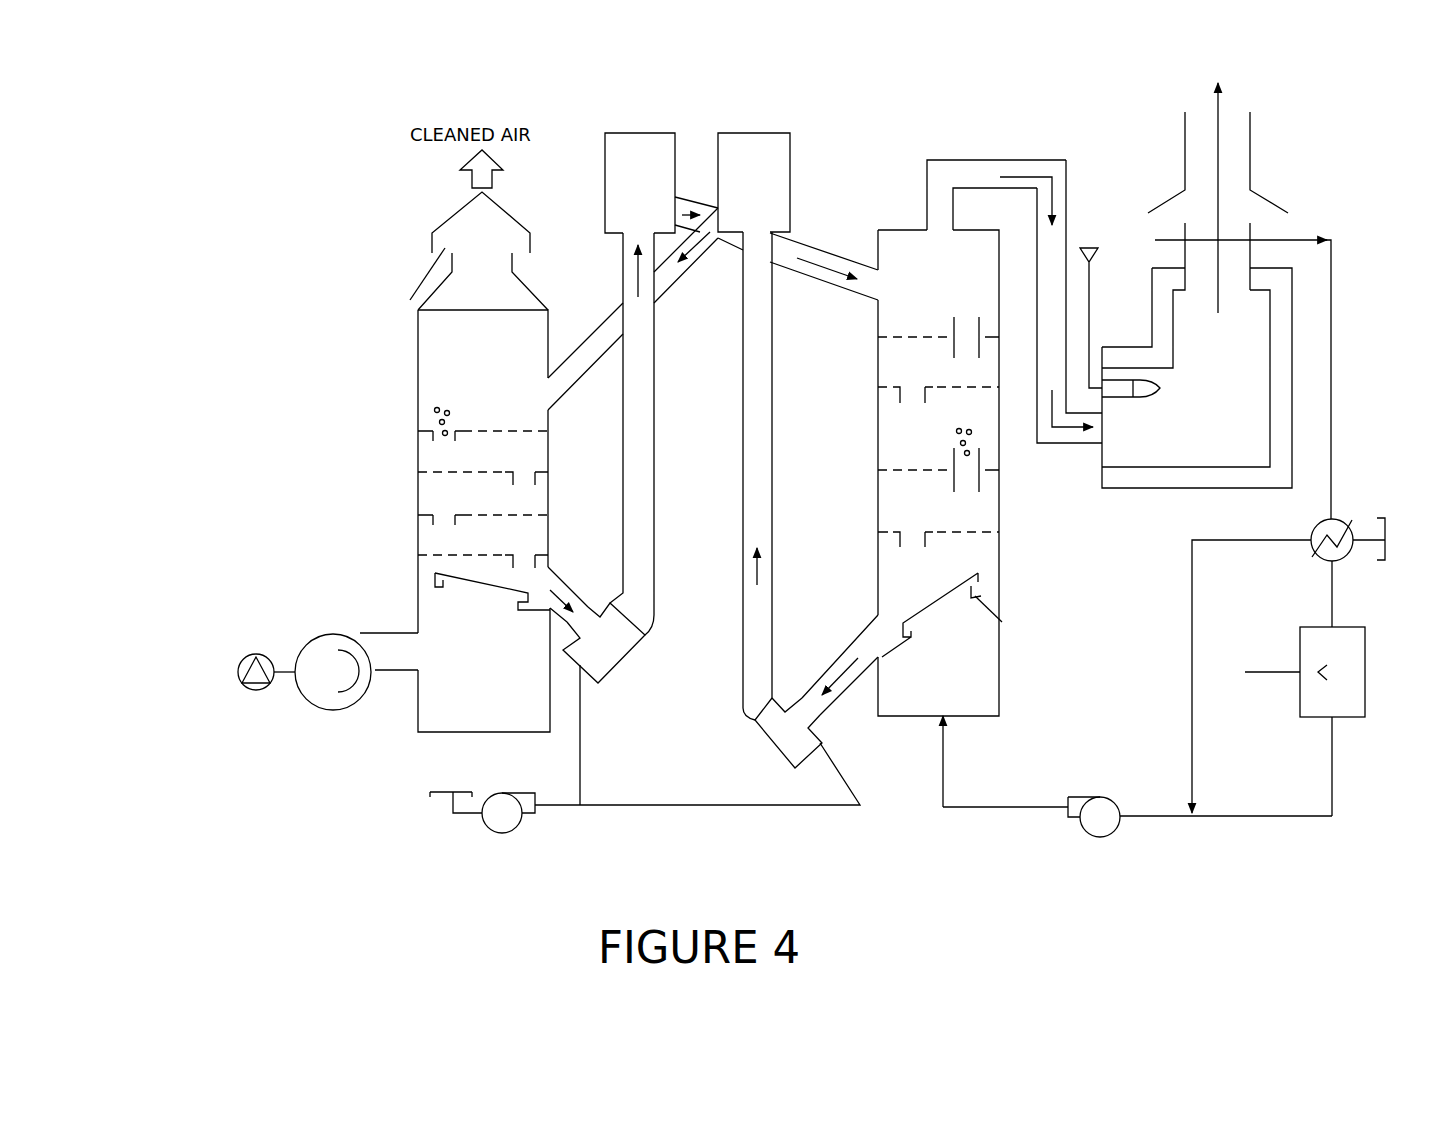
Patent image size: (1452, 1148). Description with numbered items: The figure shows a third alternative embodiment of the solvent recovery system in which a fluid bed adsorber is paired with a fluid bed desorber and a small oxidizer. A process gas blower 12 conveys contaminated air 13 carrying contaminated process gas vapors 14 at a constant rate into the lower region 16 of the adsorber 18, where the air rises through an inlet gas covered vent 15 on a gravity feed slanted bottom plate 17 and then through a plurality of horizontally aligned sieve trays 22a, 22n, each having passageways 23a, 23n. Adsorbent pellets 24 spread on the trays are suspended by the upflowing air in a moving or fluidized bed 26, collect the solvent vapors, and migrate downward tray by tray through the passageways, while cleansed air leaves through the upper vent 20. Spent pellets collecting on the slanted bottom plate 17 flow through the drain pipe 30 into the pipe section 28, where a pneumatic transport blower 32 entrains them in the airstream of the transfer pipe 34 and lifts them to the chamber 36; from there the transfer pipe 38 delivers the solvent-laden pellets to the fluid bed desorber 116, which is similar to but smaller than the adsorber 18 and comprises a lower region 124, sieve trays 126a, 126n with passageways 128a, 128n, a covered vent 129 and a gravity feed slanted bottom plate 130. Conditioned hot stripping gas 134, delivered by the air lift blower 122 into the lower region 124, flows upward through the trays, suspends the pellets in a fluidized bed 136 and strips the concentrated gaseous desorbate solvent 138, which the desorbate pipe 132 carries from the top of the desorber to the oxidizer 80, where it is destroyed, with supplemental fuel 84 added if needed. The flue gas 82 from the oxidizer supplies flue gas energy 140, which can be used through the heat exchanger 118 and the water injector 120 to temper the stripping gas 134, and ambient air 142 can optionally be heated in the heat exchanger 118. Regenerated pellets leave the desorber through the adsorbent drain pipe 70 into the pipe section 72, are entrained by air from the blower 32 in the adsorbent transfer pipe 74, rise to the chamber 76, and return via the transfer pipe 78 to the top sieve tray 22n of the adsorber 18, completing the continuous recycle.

The process gas blower 12 is at (300, 696).
The contaminated air 13 is at (382, 650).
The contaminated process gas vapors 14 is at (442, 633).
The inlet gas covered vent 15 is at (505, 588).
The lower region 16 is at (420, 707).
The gravity feed slanted bottom plate 17 is at (432, 590).
The adsorber 18 is at (408, 523).
The upper vent 20 is at (410, 301).
The sieve tray 22a is at (427, 555).
The sieve tray 22n is at (522, 429).
The passageway 23a is at (525, 555).
The passageway 23n is at (433, 437).
The adsorbent pellets 24 is at (430, 406).
The fluidized bed 26 is at (492, 513).
The pipe section 28 is at (620, 663).
The drain pipe 30 is at (553, 610).
The pneumatic transport blower 32 is at (532, 826).
The transfer pipe 34 is at (657, 550).
The chamber 36 is at (605, 193).
The transfer pipe 38 is at (687, 157).
The adsorbent drain pipe 70 is at (833, 703).
The pipe section 72 is at (763, 740).
The adsorbent transfer pipe 74 is at (773, 497).
The chamber 76 is at (788, 157).
The transfer pipe 78 is at (607, 323).
The oxidizer 80 is at (1193, 488).
The flue gas 82 is at (1218, 112).
The supplemental fuel 84 is at (1090, 303).
The fluid bed desorber 116 is at (1005, 445).
The heat exchanger 118 is at (1362, 513).
The water injector 120 is at (1317, 718).
The air lift blower 122 is at (1112, 832).
The lower region 124 is at (1002, 602).
The sieve tray 126a is at (977, 532).
The sieve tray 126n is at (903, 338).
The passageway 128a is at (897, 542).
The passageway 128n is at (970, 320).
The covered vent 129 is at (960, 585).
The gravity feed slanted bottom plate 130 is at (1002, 620).
The desorbate pipe 132 is at (1067, 187).
The conditioned hot stripping gas 134 is at (945, 792).
The fluidized bed 136 is at (987, 510).
The concentrated gaseous desorbate solvent 138 is at (987, 172).
The flue gas energy 140 is at (1302, 237).
The ambient air 142 is at (1360, 543).